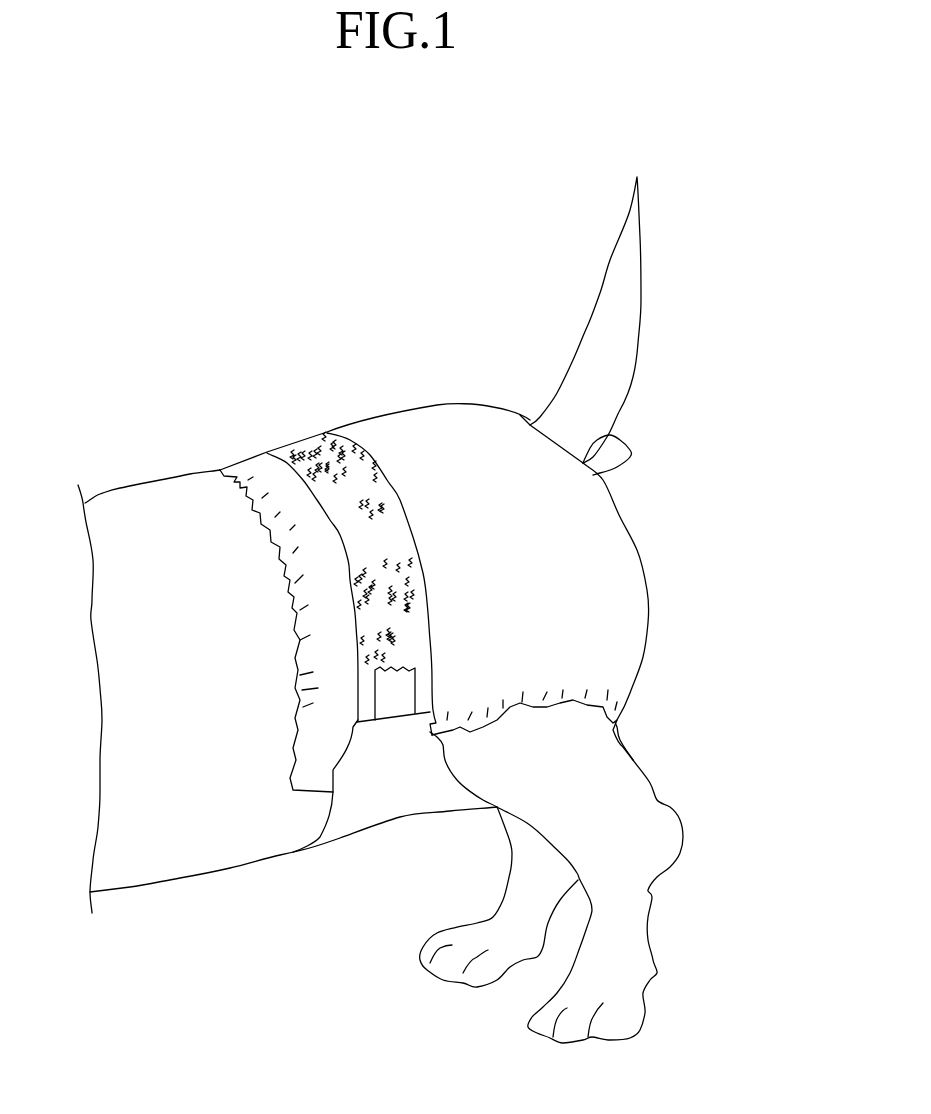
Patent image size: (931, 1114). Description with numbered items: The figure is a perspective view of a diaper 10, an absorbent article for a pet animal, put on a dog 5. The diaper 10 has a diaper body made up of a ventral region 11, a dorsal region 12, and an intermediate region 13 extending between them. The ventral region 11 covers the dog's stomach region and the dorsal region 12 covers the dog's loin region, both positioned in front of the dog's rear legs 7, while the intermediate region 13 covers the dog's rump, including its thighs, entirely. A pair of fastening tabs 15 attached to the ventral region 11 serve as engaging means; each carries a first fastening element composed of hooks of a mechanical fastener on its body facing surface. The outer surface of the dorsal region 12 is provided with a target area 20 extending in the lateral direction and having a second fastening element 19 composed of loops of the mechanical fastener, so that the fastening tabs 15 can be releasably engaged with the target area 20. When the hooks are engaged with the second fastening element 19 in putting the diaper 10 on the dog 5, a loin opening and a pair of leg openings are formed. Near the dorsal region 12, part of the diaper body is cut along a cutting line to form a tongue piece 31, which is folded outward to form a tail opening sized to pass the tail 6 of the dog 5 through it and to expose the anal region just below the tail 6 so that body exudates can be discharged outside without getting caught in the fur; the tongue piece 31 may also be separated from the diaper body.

The dog 5 is at (253, 892).
The tail 6 is at (620, 315).
The rear legs 7 is at (648, 817).
The diaper 10 is at (706, 504).
The ventral region 11 is at (393, 793).
The dorsal region 12 is at (440, 425).
The intermediate region 13 is at (623, 587).
The fastening tabs 15 is at (398, 688).
The second fastening element 19 is at (382, 507).
The target area 20 is at (393, 542).
The tongue piece 31 is at (613, 453).